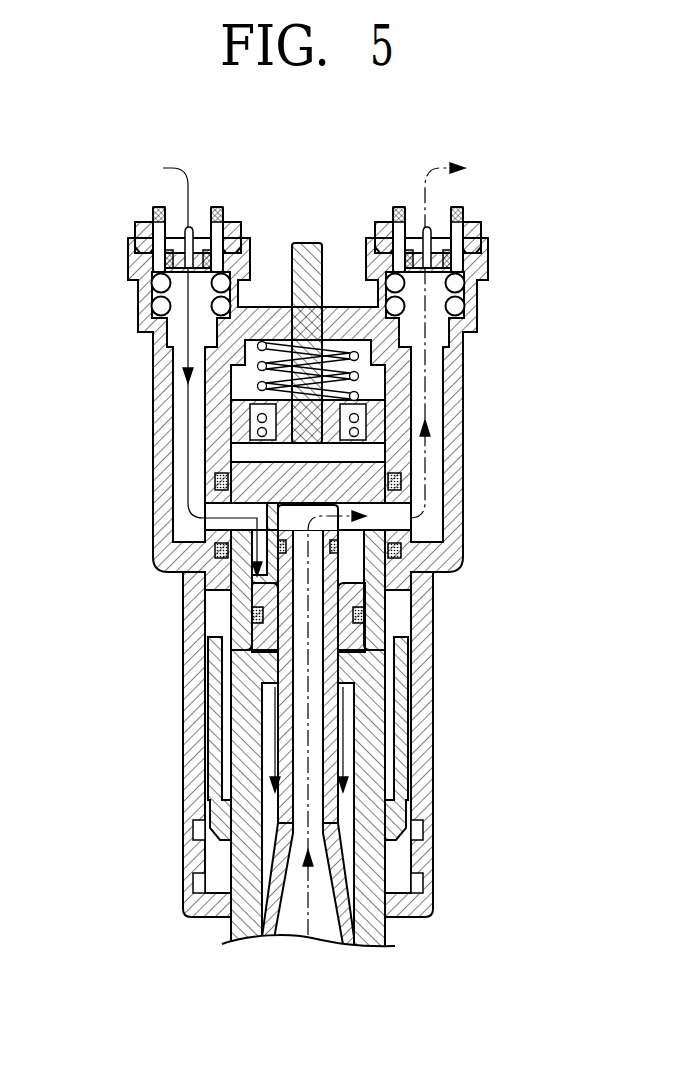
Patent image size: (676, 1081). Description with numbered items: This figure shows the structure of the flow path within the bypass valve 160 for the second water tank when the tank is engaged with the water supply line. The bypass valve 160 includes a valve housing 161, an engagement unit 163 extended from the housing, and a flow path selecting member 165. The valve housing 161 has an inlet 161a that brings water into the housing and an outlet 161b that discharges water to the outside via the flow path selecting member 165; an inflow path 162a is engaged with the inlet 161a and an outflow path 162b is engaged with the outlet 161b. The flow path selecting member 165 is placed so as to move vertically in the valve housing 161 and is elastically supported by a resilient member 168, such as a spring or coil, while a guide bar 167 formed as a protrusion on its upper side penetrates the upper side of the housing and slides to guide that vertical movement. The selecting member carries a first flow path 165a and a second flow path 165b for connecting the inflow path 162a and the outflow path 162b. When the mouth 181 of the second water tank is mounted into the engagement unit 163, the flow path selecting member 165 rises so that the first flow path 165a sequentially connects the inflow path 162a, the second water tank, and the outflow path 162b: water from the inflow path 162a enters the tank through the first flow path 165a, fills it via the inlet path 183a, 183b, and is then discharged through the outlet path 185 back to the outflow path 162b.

The bypass valve for the second water tank 160 is at (525, 136).
The valve housing 161 is at (463, 462).
The inlet 161a is at (128, 258).
The outlet 161b is at (488, 258).
The inflow path 162a is at (188, 398).
The outflow path 162b is at (428, 398).
The engagement unit 163 is at (433, 729).
The flow path selecting member 165 is at (307, 500).
The first flow path 165a is at (250, 493).
The second flow path 165b is at (237, 445).
The guide bar 167 is at (307, 243).
The resilient member 168 is at (277, 352).
The mouth of the second water tank 181 is at (306, 735).
The inlet path 183a is at (270, 840).
The inlet path 183b is at (345, 847).
The outlet path 185 is at (312, 830).